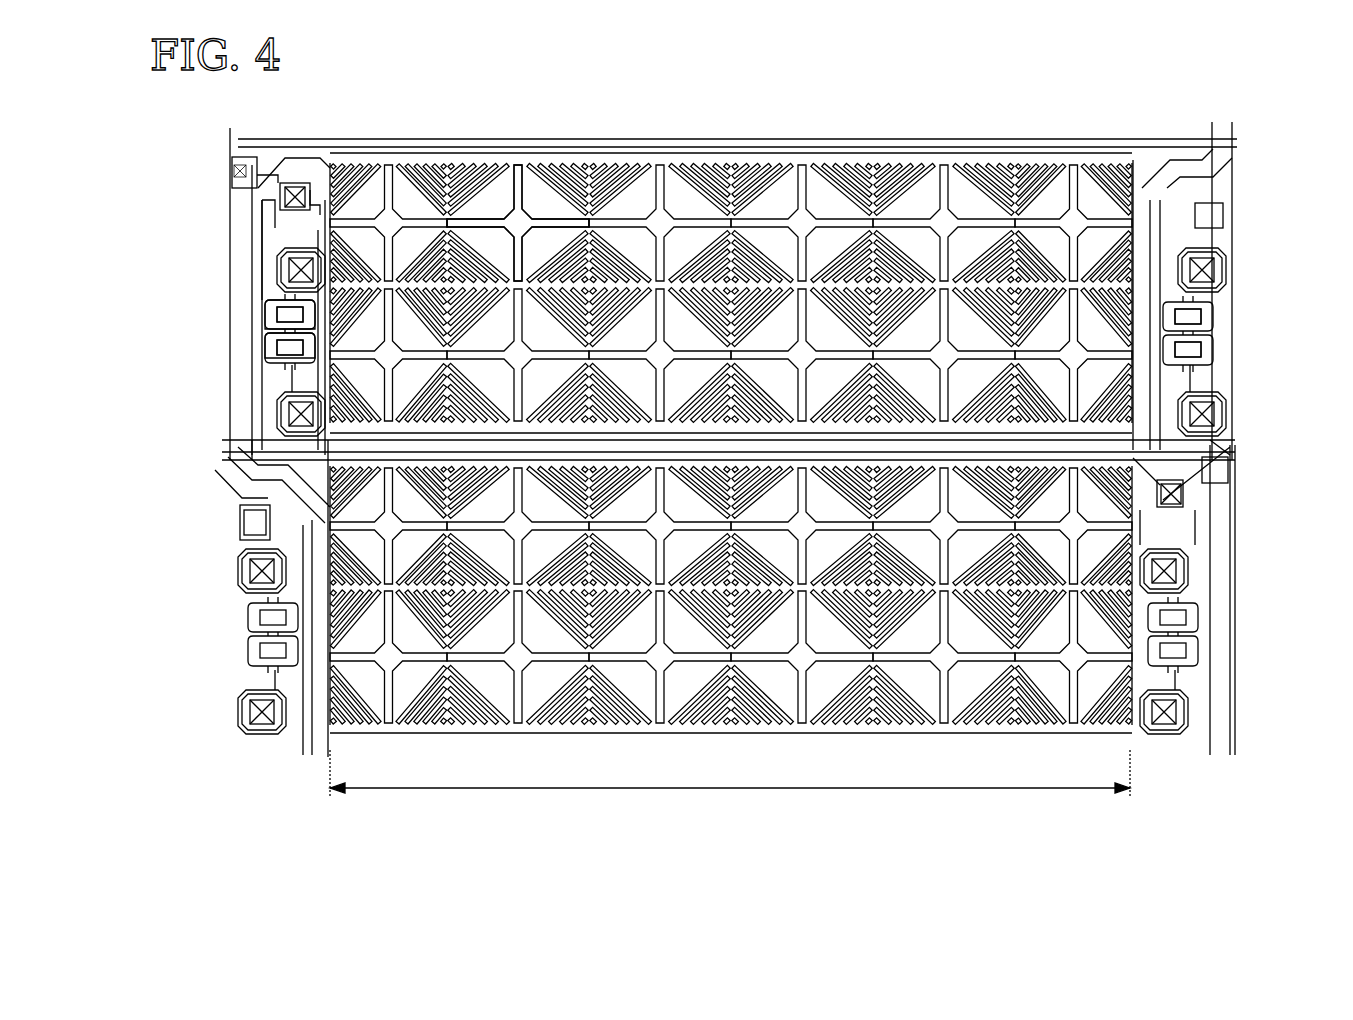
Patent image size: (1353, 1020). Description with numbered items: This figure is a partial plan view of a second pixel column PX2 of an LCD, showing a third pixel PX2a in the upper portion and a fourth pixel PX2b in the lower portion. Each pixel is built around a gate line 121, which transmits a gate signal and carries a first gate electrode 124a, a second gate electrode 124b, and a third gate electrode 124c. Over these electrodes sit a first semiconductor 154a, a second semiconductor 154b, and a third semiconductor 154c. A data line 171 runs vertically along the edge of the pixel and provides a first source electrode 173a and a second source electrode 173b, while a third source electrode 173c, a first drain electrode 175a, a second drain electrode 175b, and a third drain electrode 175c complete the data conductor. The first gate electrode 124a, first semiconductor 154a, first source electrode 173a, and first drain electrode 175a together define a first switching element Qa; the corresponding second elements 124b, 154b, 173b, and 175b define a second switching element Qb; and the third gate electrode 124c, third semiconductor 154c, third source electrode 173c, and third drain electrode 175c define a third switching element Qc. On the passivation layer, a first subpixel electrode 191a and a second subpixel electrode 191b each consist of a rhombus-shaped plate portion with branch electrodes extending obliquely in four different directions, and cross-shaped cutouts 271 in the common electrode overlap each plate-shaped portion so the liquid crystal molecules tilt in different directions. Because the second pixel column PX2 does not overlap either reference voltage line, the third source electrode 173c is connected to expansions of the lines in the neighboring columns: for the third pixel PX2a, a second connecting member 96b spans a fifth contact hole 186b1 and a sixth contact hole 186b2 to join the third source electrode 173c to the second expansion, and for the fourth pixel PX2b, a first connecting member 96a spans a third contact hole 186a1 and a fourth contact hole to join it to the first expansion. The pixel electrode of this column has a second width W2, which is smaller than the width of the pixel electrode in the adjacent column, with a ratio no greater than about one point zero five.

The first subpixel electrode 191a is at (430, 165).
The second subpixel electrode 191b is at (570, 300).
The cross-shaped cutout 271 is at (540, 215).
The second pixel column PX2 is at (705, 125).
The third pixel PX2a is at (1222, 331).
The fourth pixel PX2b is at (1228, 628).
The data line 171 is at (1212, 128).
The gate line 121 is at (222, 462).
The third gate electrode 124c is at (285, 205).
The sixth contact hole 186b2 is at (275, 168).
The fifth contact hole 186b1 is at (294, 185).
The third switching element Qc is at (290, 178).
The third source electrode 173c is at (312, 198).
The second connecting member 96b is at (300, 215).
The third drain electrode 175c is at (275, 228).
The third semiconductor 154c is at (288, 262).
The first semiconductor 154a is at (278, 297).
The first gate electrode 124a is at (275, 307).
The second source electrode 173b is at (268, 338).
The second gate electrode 124b is at (270, 352).
The second semiconductor 154b is at (280, 392).
The first switching element Qa is at (322, 300).
The second switching element Qb is at (320, 372).
The first drain electrode 175a is at (1222, 282).
The first source electrode 173a is at (1220, 302).
The second drain electrode 175b is at (1225, 402).
The first connecting member 96a is at (1230, 470).
The third contact hole 186a1 is at (1182, 506).
The second width W2 is at (730, 781).